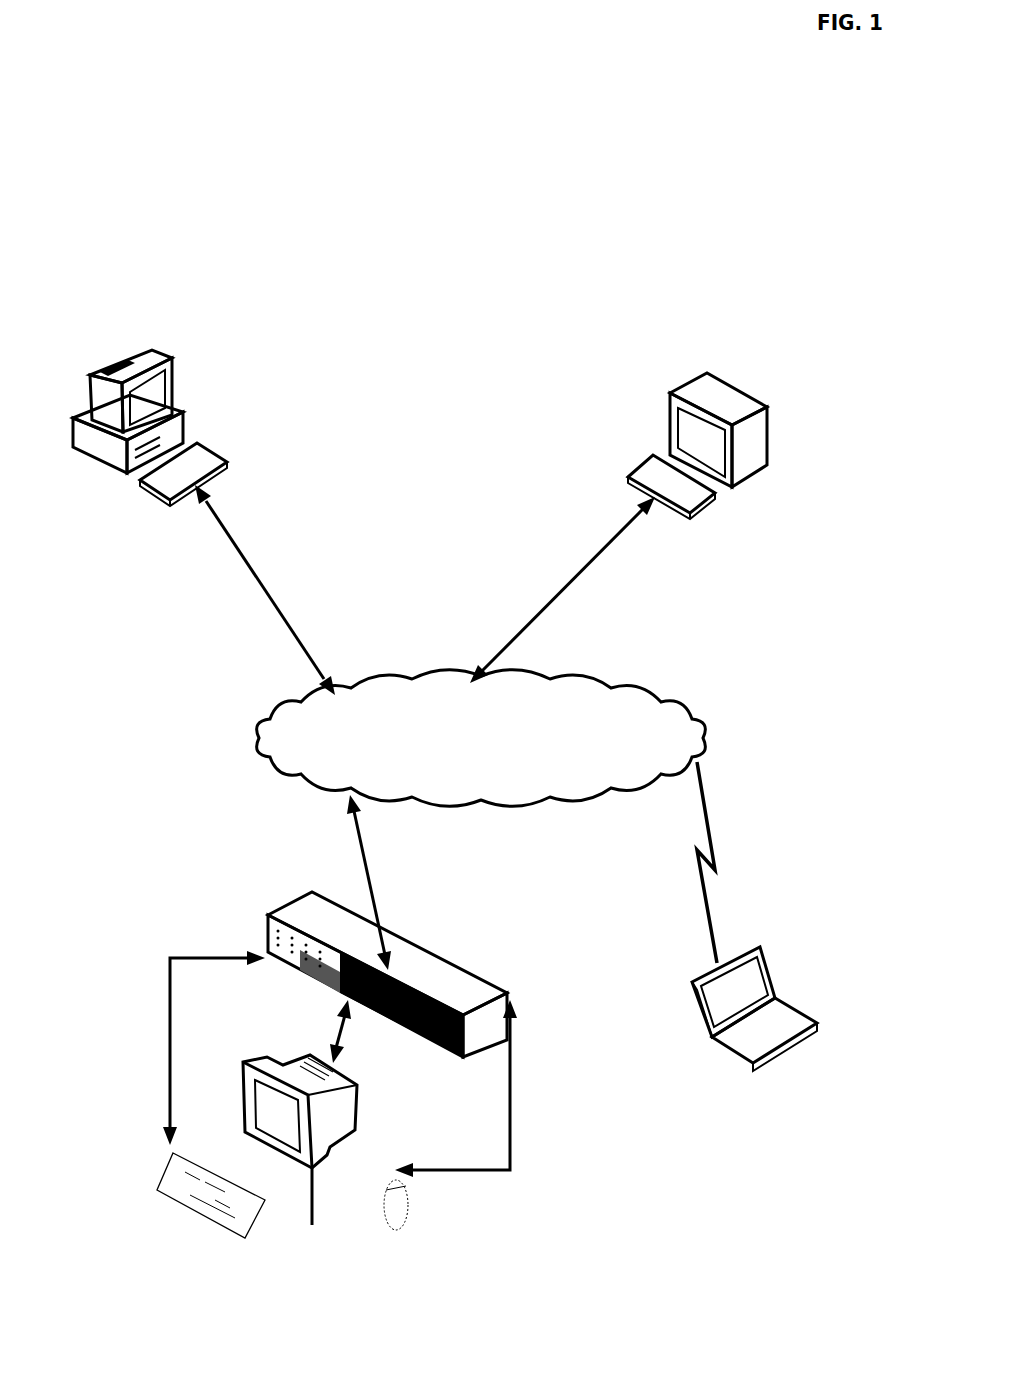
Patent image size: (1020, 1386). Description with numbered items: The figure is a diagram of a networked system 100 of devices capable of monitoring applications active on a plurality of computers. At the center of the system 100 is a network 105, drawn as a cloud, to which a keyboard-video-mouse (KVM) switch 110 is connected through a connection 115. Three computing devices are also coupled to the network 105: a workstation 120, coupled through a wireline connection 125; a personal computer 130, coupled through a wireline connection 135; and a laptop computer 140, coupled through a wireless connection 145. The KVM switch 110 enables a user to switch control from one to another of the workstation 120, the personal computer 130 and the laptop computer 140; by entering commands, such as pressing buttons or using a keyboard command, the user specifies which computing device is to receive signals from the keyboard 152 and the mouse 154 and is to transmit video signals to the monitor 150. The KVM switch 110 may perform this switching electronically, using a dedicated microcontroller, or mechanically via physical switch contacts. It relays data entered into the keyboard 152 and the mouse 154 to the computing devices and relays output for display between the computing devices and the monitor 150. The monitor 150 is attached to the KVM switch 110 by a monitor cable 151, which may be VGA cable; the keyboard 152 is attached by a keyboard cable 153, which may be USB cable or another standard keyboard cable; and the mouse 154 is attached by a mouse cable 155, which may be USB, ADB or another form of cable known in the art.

The networked system 100 is at (562, 207).
The network 105 is at (673, 710).
The keyboard-video-mouse (KVM) switch 110 is at (267, 915).
The connection 115 is at (360, 860).
The workstation 120 is at (740, 385).
The wireline connection 125 is at (523, 627).
The personal computer 130 is at (172, 357).
The wireline connection 135 is at (268, 588).
The laptop computer 140 is at (800, 998).
The wireless connection 145 is at (700, 890).
The monitor 150 is at (284, 1155).
The monitor cable 151 is at (337, 1022).
The keyboard 152 is at (163, 1168).
The keyboard cable 153 is at (170, 956).
The mouse 154 is at (405, 1202).
The mouse cable 155 is at (513, 1100).